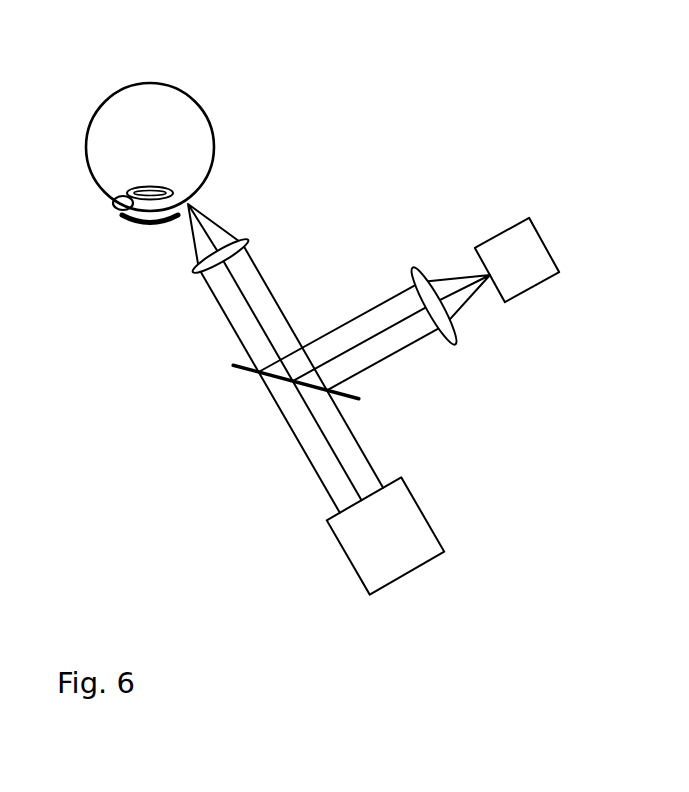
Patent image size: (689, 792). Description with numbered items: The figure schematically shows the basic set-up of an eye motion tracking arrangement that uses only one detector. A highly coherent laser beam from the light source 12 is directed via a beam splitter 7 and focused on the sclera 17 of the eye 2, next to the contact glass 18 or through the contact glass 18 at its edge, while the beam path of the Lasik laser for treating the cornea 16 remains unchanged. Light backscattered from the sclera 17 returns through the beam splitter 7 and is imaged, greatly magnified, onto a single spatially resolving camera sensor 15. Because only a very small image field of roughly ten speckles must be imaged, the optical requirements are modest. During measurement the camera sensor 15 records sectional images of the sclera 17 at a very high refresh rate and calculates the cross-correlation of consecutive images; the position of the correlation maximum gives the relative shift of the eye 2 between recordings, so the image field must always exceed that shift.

The eye 2 is at (198, 101).
The beam splitter 7 is at (258, 371).
The light source 12 is at (515, 225).
The camera sensor 15 is at (428, 509).
The cornea 16 is at (115, 200).
The sclera 17 is at (191, 203).
The contact glass 18 is at (130, 225).